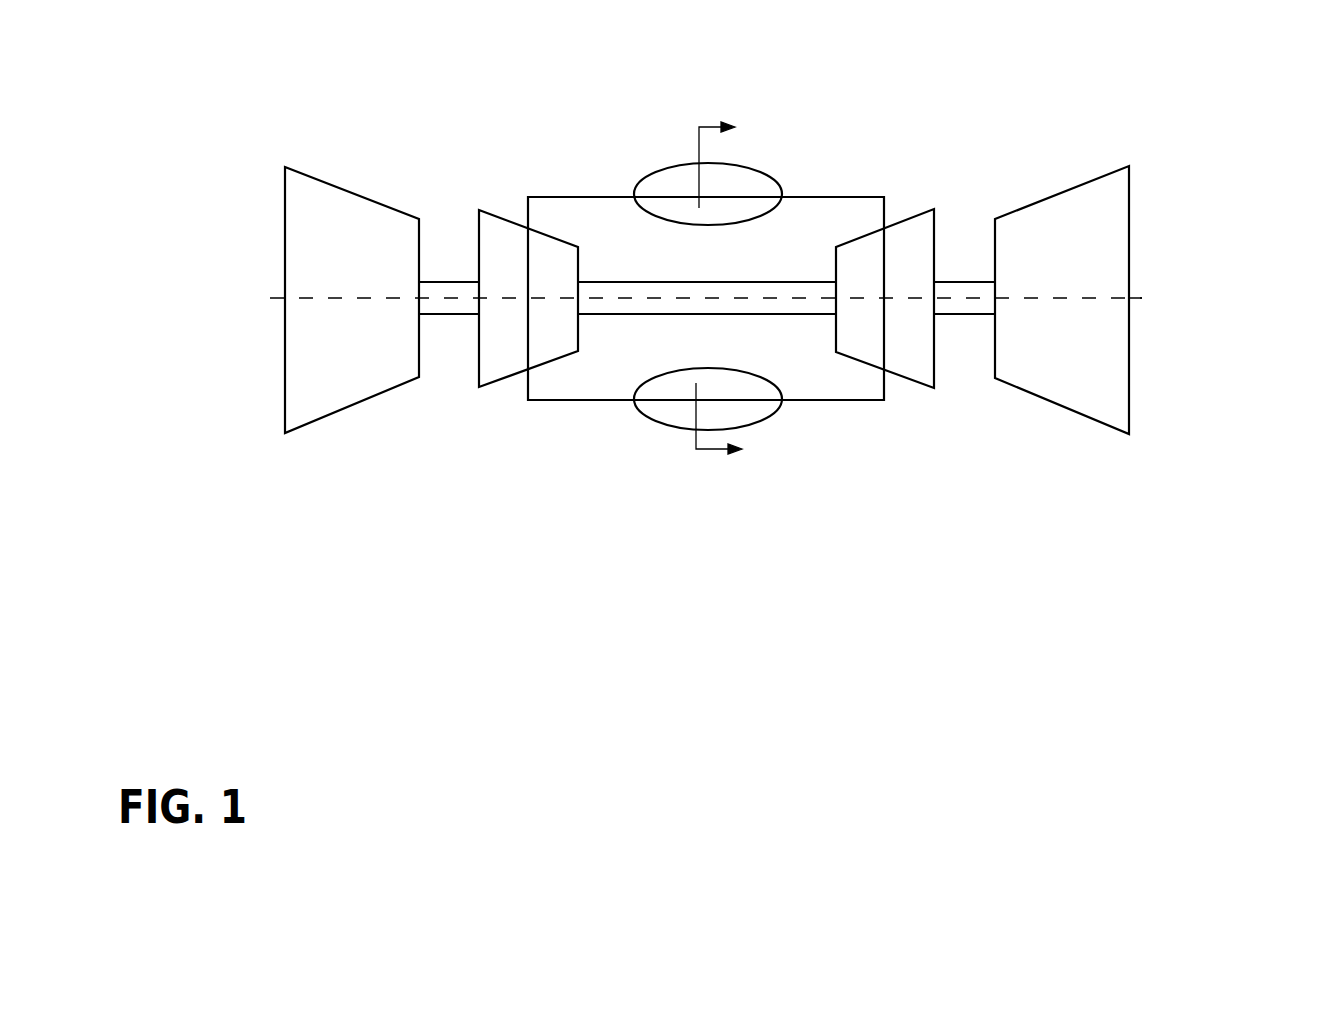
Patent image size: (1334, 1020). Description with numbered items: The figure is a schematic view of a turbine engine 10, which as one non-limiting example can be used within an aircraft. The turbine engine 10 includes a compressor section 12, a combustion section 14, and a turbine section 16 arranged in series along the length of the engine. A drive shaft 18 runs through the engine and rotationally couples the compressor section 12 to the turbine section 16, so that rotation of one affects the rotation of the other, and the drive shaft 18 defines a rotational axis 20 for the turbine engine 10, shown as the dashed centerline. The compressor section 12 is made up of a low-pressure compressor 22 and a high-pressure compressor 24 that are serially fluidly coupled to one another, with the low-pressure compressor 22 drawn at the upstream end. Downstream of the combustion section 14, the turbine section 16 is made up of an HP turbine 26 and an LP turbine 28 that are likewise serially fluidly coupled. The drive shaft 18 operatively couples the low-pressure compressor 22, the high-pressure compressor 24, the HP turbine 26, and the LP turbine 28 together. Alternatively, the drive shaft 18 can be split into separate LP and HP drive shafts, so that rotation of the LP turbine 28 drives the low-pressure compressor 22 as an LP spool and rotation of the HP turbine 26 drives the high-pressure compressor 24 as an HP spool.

The turbine engine 10 is at (1317, 179).
The compressor section 12 is at (412, 147).
The combustion section 14 is at (668, 427).
The turbine section 16 is at (1015, 147).
The drive shaft 18 is at (706, 281).
The rotational axis 20 is at (1137, 297).
The low-pressure compressor 22 is at (285, 205).
The high-pressure compressor 24 is at (479, 244).
The HP turbine 26 is at (934, 245).
The LP turbine 28 is at (1129, 200).